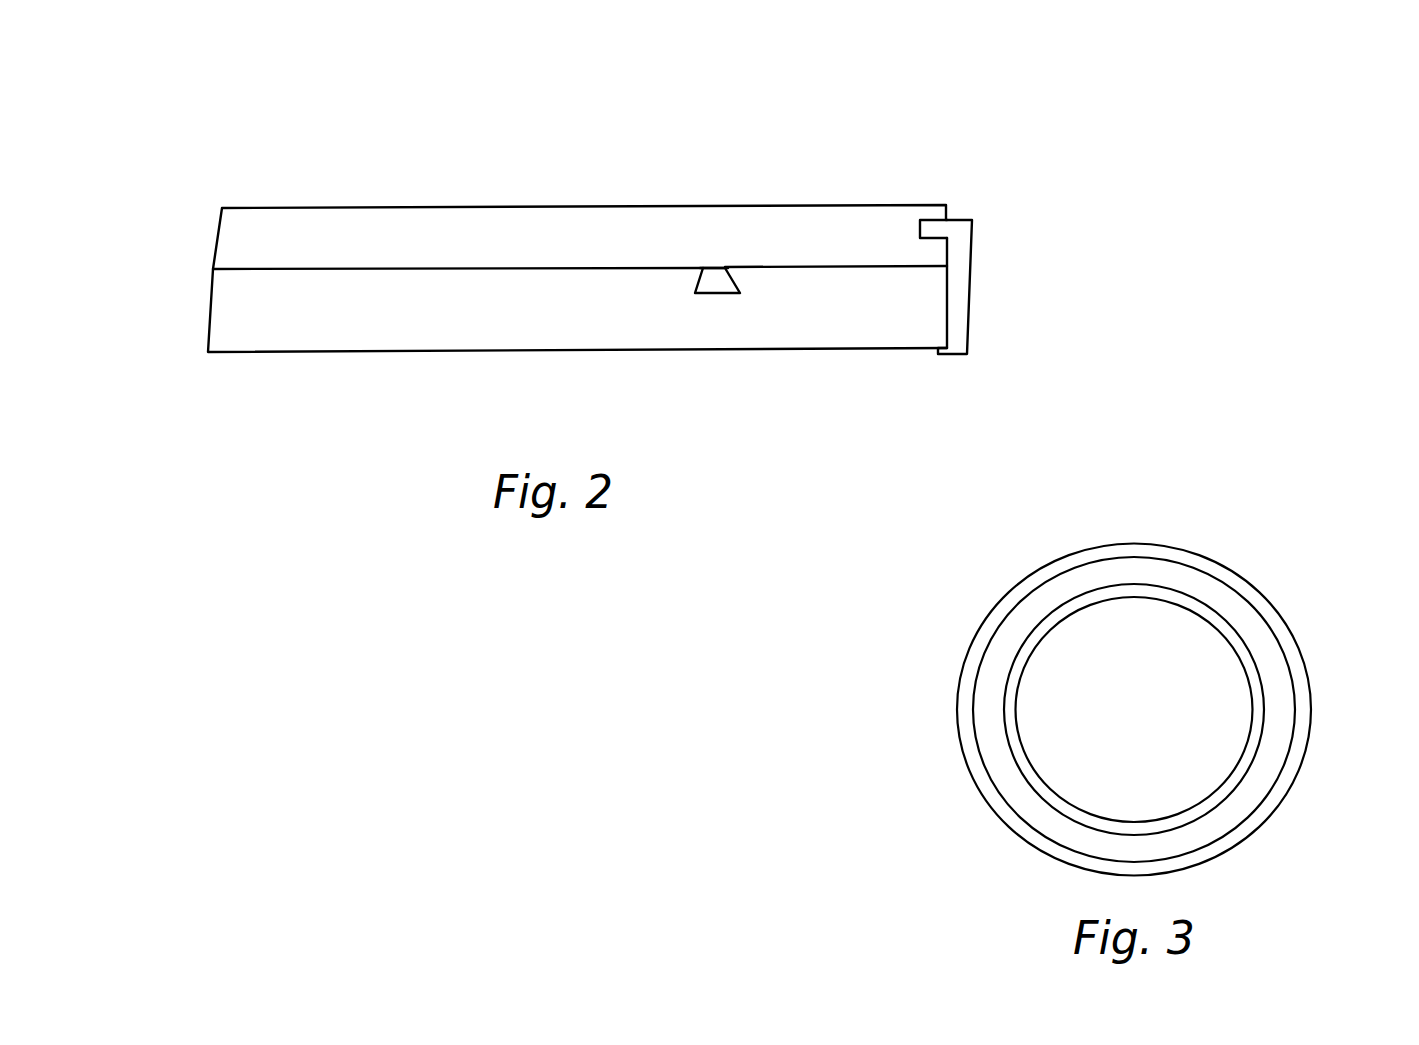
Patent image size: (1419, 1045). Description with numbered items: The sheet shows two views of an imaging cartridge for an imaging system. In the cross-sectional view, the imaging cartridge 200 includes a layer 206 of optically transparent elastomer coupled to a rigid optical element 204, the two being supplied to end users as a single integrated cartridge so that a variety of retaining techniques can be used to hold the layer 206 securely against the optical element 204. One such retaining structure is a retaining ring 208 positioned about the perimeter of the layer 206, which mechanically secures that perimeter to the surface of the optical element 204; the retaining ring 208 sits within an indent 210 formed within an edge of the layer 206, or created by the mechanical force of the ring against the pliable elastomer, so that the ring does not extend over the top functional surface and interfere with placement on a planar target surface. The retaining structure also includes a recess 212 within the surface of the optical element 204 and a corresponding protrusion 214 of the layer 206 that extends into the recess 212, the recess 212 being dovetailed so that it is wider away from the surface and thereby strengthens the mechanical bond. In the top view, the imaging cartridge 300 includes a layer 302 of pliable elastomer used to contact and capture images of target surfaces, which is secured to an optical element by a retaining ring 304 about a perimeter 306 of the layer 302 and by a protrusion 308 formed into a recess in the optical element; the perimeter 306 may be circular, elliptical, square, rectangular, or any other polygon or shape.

In FIG. 2, the imaging cartridge 200 is at (344, 153).
In FIG. 2, the optical element 204 is at (592, 348).
In FIG. 2, the layer of optically transparent elastomer 206 is at (583, 207).
In FIG. 2, the retaining ring 208 is at (970, 283).
In FIG. 2, the indent 210 is at (920, 232).
In FIG. 2, the recess 212 is at (722, 291).
In FIG. 2, the protrusion 214 is at (708, 268).
In FIG. 3, the imaging cartridge 300 is at (1320, 578).
In FIG. 3, the layer of pliable elastomer 302 is at (1153, 714).
In FIG. 3, the retaining ring 304 is at (978, 636).
In FIG. 3, the perimeter 306 is at (968, 752).
In FIG. 3, the protrusion 308 is at (1077, 807).